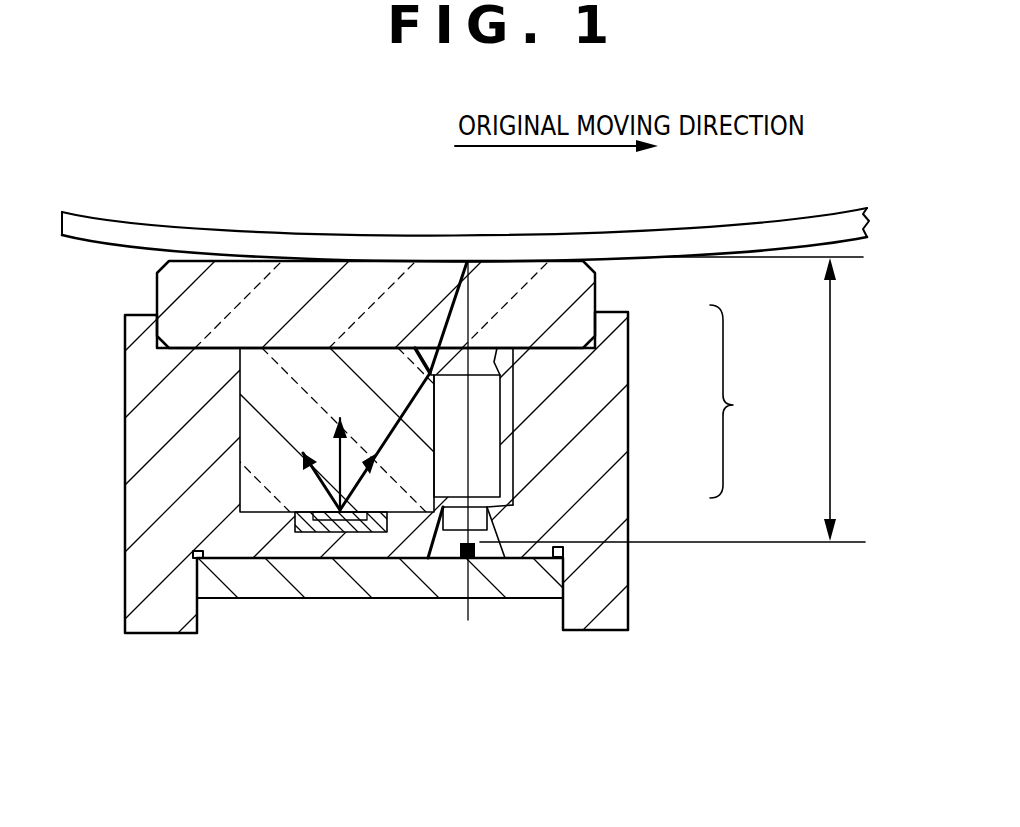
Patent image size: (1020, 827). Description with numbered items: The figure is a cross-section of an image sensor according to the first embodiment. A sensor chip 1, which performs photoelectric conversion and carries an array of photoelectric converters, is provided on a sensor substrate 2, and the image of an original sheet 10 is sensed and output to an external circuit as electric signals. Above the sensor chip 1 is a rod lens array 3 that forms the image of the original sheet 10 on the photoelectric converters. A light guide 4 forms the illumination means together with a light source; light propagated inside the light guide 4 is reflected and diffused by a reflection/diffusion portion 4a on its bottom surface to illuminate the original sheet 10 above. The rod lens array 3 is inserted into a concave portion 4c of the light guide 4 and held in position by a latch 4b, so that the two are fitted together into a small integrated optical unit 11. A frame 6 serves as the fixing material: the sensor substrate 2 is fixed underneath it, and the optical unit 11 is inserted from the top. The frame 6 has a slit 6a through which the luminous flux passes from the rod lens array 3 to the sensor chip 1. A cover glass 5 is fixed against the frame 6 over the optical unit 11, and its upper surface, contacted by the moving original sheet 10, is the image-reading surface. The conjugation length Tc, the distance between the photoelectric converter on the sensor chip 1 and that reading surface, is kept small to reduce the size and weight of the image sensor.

The sensor chip 1 is at (480, 555).
The sensor substrate 2 is at (383, 582).
The rod lens array 3 is at (485, 428).
The light guide 4 is at (420, 415).
The reflection/diffusion portion 4a is at (385, 497).
The latch 4b is at (505, 363).
The concave portion 4c is at (500, 488).
The cover glass 5 is at (568, 284).
The frame 6 is at (605, 592).
The slit 6a is at (473, 523).
The original sheet 10 is at (637, 240).
The optical unit 11 is at (745, 401).
The conjugation length Tc is at (674, 399).